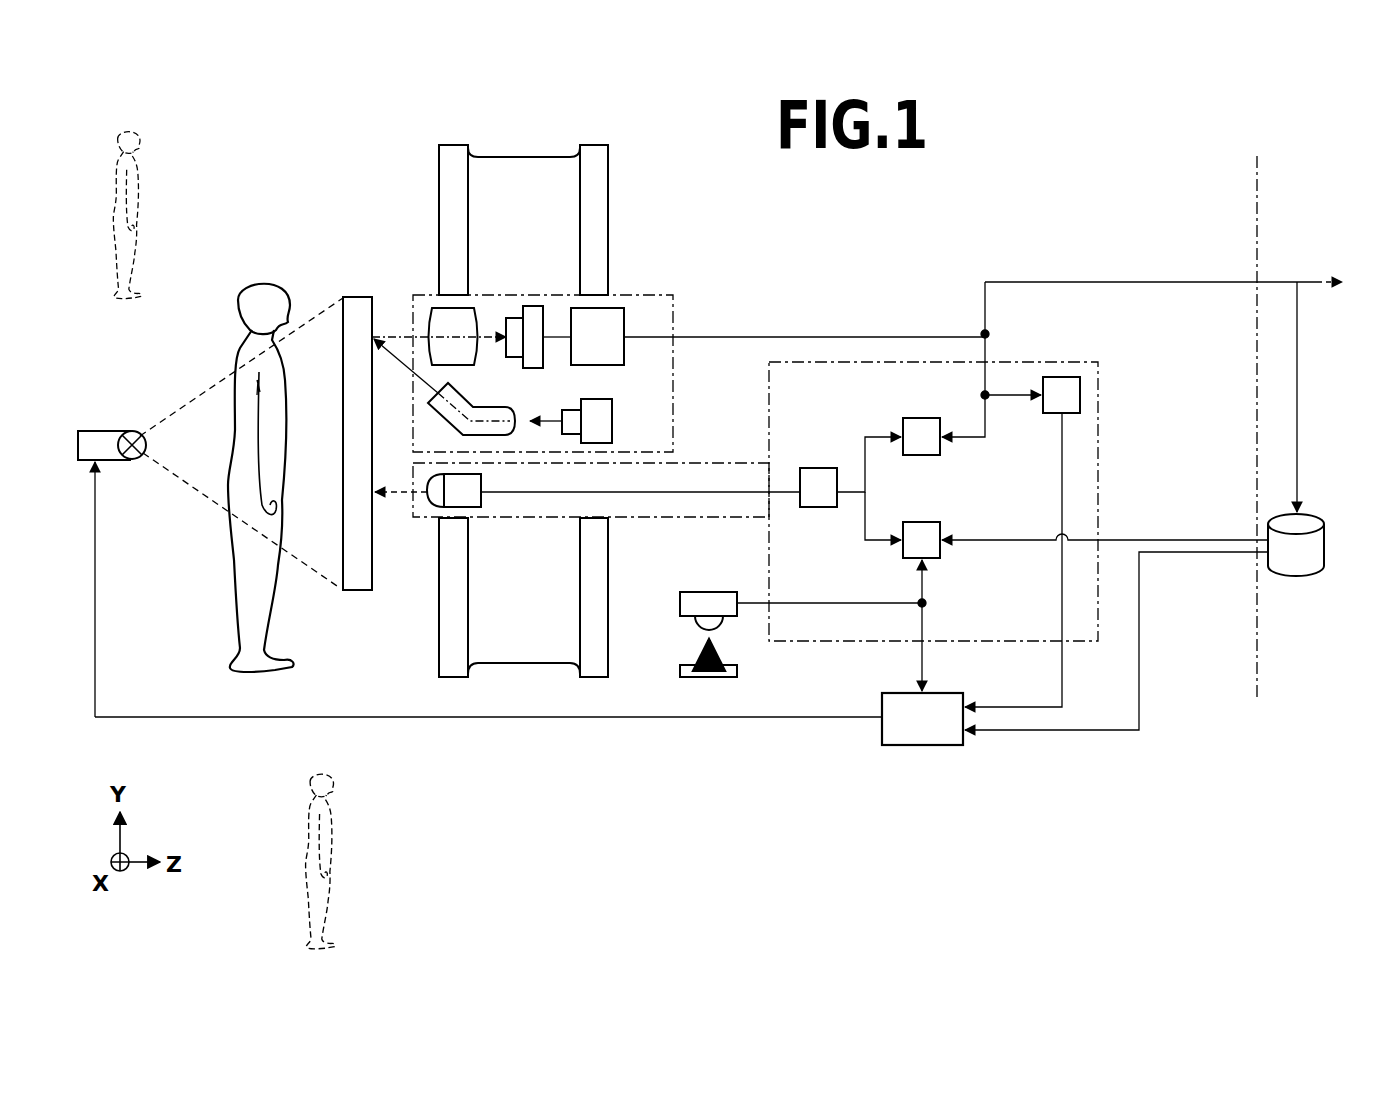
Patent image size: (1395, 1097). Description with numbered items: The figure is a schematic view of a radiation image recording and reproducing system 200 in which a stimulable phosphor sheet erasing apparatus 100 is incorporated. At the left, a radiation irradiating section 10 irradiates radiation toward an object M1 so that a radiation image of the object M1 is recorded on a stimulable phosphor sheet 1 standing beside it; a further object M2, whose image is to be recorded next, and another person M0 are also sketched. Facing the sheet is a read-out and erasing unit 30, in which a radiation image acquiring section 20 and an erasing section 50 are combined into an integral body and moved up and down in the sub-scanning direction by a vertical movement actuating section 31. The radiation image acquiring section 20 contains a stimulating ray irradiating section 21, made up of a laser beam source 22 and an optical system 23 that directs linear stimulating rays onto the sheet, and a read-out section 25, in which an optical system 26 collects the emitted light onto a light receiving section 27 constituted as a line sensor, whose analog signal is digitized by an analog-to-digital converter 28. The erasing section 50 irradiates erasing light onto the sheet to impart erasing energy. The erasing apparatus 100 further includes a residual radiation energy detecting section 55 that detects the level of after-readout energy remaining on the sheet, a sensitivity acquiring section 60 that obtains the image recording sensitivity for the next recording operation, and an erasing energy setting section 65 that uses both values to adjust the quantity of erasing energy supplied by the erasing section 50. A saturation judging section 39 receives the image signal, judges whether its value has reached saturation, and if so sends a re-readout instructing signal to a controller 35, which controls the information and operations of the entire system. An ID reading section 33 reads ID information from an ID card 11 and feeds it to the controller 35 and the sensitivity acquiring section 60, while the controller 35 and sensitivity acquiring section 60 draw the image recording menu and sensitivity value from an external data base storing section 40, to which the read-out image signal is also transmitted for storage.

The stimulable phosphor sheet 1 is at (362, 592).
The radiation irradiating section 10 is at (130, 430).
The ID card 11 is at (692, 665).
The radiation image acquiring section 20 is at (620, 297).
The stimulating ray irradiating section 21 is at (520, 495).
The laser beam source 22 is at (598, 444).
The optical system 23 is at (478, 435).
The read-out section 25 is at (527, 279).
The optical system 26 is at (462, 308).
The light receiving section 27 is at (510, 318).
The analog-to-digital converter 28 is at (590, 308).
The read-out and erasing unit 30 is at (692, 283).
The vertical movement actuating section 31 is at (522, 158).
The ID reading section 33 is at (692, 592).
The controller 35 is at (923, 745).
The saturation judging section 39 is at (1050, 414).
The data base storing section 40 is at (1296, 576).
The erasing section 50 is at (462, 497).
The residual radiation energy detecting section 55 is at (922, 456).
The sensitivity acquiring section 60 is at (936, 558).
The erasing energy setting section 65 is at (815, 468).
The stimulable phosphor sheet erasing apparatus 100 is at (1100, 440).
The radiation image recording and reproducing system 200 is at (1142, 170).
The person at waiting position M0 is at (318, 774).
The object M1 is at (248, 296).
The object M2 is at (138, 128).